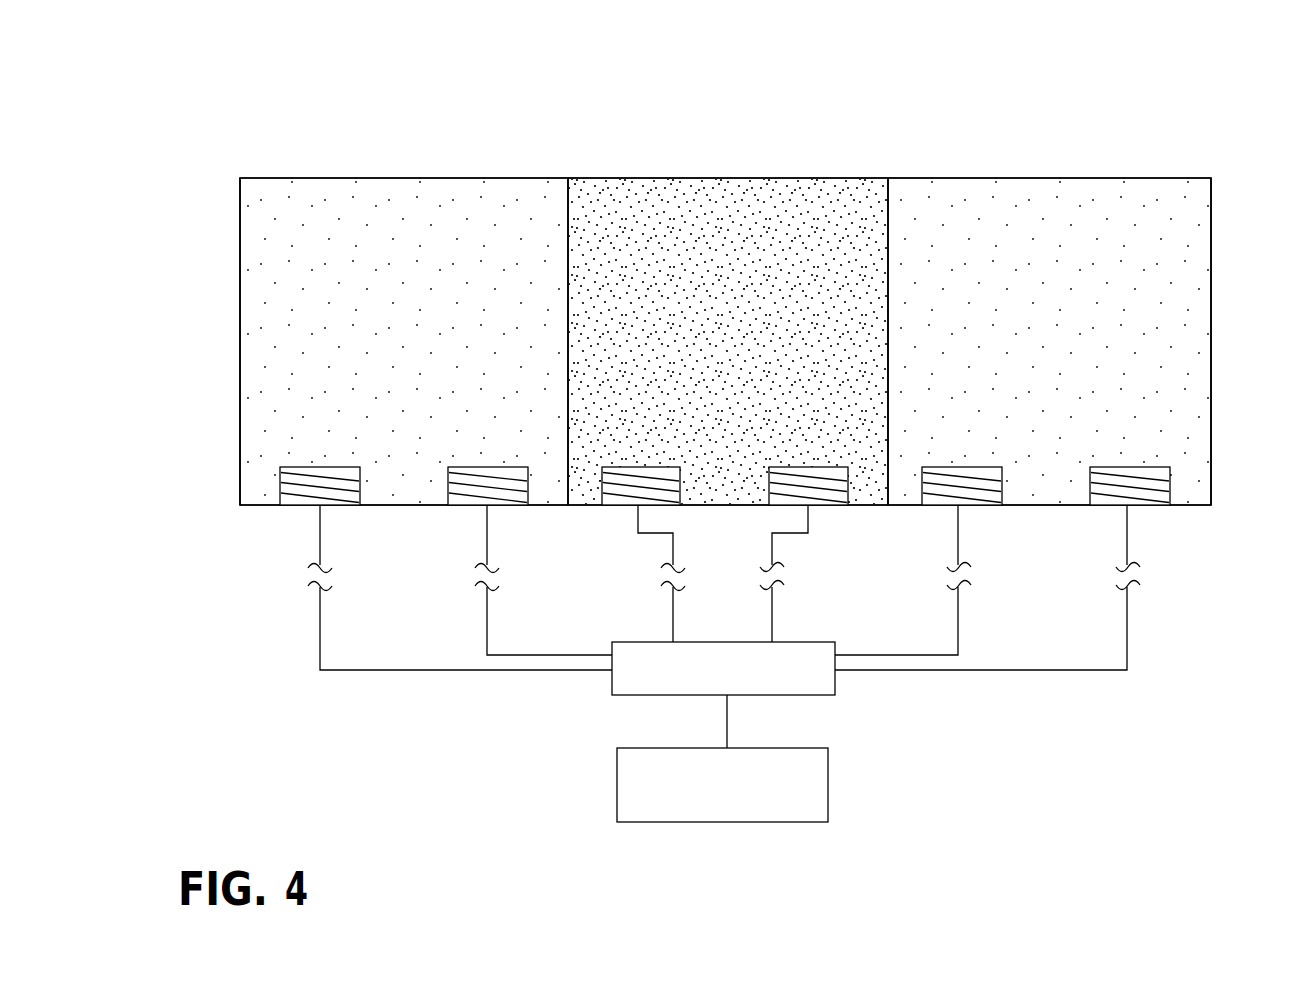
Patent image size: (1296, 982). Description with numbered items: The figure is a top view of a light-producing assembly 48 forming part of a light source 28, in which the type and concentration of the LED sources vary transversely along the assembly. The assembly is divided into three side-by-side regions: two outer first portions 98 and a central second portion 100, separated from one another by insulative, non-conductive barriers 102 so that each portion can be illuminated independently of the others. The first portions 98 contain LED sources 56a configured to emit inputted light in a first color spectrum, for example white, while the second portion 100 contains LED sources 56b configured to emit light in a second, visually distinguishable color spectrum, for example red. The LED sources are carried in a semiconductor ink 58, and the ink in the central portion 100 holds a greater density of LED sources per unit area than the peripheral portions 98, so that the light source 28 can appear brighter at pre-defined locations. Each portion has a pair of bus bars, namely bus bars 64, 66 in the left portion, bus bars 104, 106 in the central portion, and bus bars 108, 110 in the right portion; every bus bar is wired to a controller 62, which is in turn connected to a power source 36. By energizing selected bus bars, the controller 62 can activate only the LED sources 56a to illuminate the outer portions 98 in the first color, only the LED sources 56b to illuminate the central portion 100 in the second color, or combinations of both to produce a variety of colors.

The light source 28 is at (965, 71).
The power source 36 is at (828, 770).
The light-producing assembly 48 is at (237, 310).
The LED sources 56a is at (438, 213).
The LED sources 56b is at (745, 197).
The semiconductor ink 58 is at (1215, 326).
The controller 62 is at (835, 685).
The bus bar 64 is at (300, 492).
The bus bar 66 is at (467, 492).
The first portion 98 is at (320, 204).
The second portion 100 is at (682, 195).
The barrier 102 is at (571, 194).
The bus bar 104 is at (622, 492).
The bus bar 106 is at (823, 493).
The bus bar 108 is at (978, 493).
The bus bar 110 is at (1150, 493).